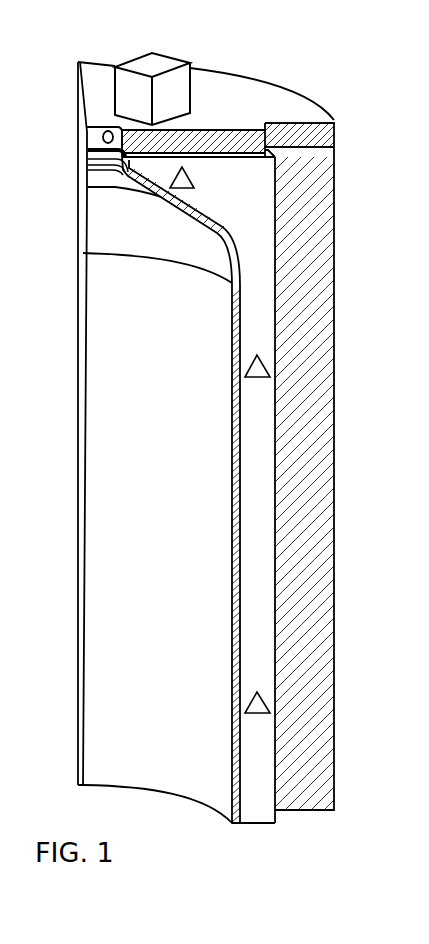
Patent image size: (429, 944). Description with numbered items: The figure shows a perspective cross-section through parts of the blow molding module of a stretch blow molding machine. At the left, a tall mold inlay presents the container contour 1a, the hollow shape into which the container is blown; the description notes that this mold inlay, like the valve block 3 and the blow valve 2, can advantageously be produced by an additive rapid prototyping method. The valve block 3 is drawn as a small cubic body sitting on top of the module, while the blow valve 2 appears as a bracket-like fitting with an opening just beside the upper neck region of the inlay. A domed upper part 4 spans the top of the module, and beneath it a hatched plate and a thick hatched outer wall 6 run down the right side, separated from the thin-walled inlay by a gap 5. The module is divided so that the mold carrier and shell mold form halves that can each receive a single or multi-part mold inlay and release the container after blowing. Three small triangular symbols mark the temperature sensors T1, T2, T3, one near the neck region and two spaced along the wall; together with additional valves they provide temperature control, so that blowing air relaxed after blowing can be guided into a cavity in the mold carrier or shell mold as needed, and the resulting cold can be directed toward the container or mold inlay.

The container contour 1a is at (113, 565).
The blow valve 2 is at (103, 137).
The valve block 3 is at (127, 83).
The cover / dome 4 is at (253, 93).
The gap between inner vessel and outer wall 5 is at (262, 217).
The outer wall 6 is at (317, 275).
The temperature sensor T1 is at (270, 702).
The temperature sensor T2 is at (270, 363).
The temperature sensor T3 is at (175, 190).